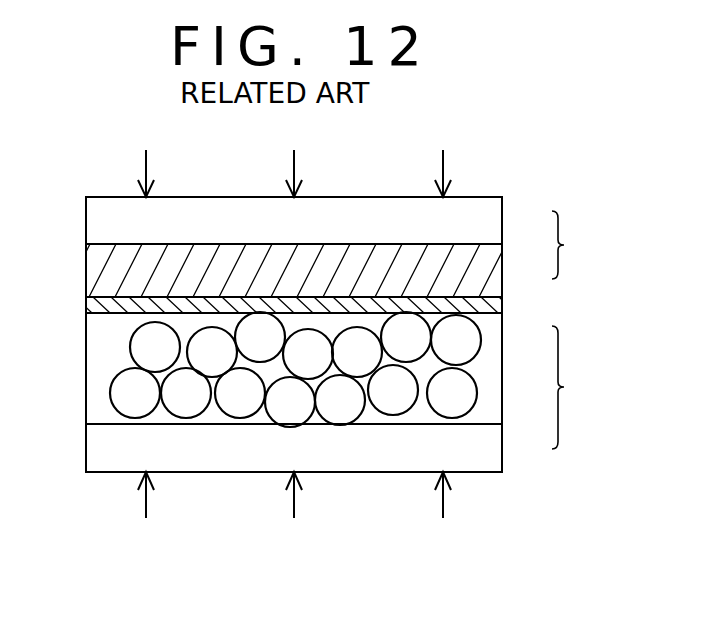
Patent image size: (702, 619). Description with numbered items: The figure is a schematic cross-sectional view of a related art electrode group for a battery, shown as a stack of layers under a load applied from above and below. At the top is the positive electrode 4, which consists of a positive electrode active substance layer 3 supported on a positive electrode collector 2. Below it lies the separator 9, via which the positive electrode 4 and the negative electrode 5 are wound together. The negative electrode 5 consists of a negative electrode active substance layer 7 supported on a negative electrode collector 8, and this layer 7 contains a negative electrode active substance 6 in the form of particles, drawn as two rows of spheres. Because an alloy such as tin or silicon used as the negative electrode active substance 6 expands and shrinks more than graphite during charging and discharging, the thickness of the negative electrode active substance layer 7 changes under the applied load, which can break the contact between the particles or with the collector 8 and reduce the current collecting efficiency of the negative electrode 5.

The positive electrode collector 2 is at (485, 231).
The positive electrode active substance layer 3 is at (487, 270).
The positive electrode 4 is at (568, 245).
The negative electrode 5 is at (568, 387).
The negative electrode active substance 6 is at (470, 346).
The negative electrode active substance layer 7 is at (490, 386).
The negative electrode collector 8 is at (490, 441).
The separator 9 is at (485, 308).